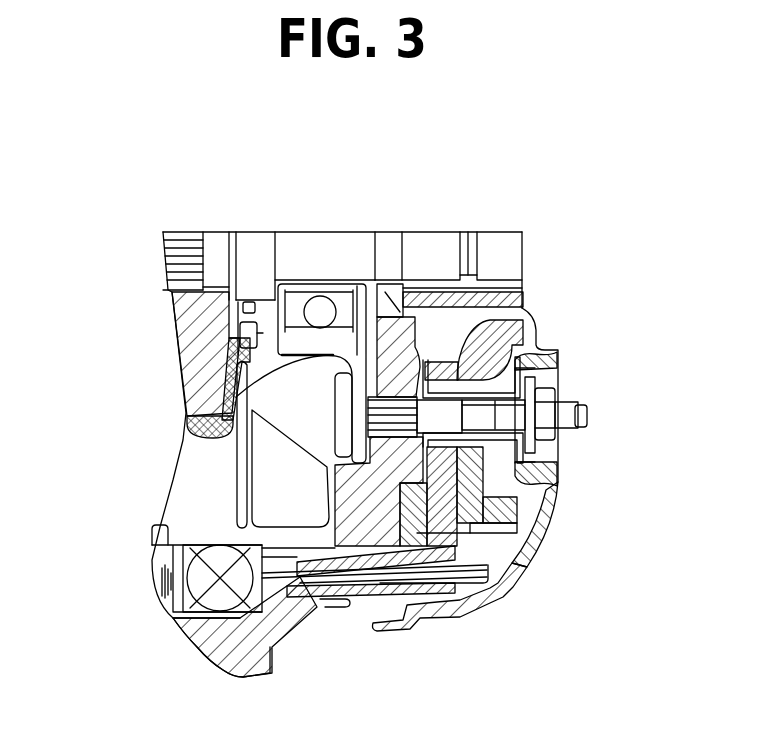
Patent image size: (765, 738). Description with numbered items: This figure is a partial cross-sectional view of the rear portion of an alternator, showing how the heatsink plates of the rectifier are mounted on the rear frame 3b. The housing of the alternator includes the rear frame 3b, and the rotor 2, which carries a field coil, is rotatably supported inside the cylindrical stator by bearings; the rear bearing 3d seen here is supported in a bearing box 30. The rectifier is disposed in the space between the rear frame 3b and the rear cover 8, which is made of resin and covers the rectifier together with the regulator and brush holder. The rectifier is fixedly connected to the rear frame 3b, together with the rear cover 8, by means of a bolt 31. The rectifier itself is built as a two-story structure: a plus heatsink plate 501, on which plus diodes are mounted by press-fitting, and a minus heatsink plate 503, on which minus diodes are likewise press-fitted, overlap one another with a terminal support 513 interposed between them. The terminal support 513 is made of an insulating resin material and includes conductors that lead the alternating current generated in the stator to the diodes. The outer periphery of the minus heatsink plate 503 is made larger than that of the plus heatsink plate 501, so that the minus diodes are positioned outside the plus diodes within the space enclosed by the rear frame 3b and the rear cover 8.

The rotor 2 is at (198, 460).
The bearing box 30 is at (188, 394).
The bolt 31 is at (345, 423).
The rear bearing 3d is at (298, 288).
The rear frame 3b is at (270, 655).
The terminal support 513 is at (428, 358).
The plus heatsink plate 501 is at (557, 488).
The rear cover 8 is at (542, 533).
The minus heatsink plate 503 is at (422, 527).